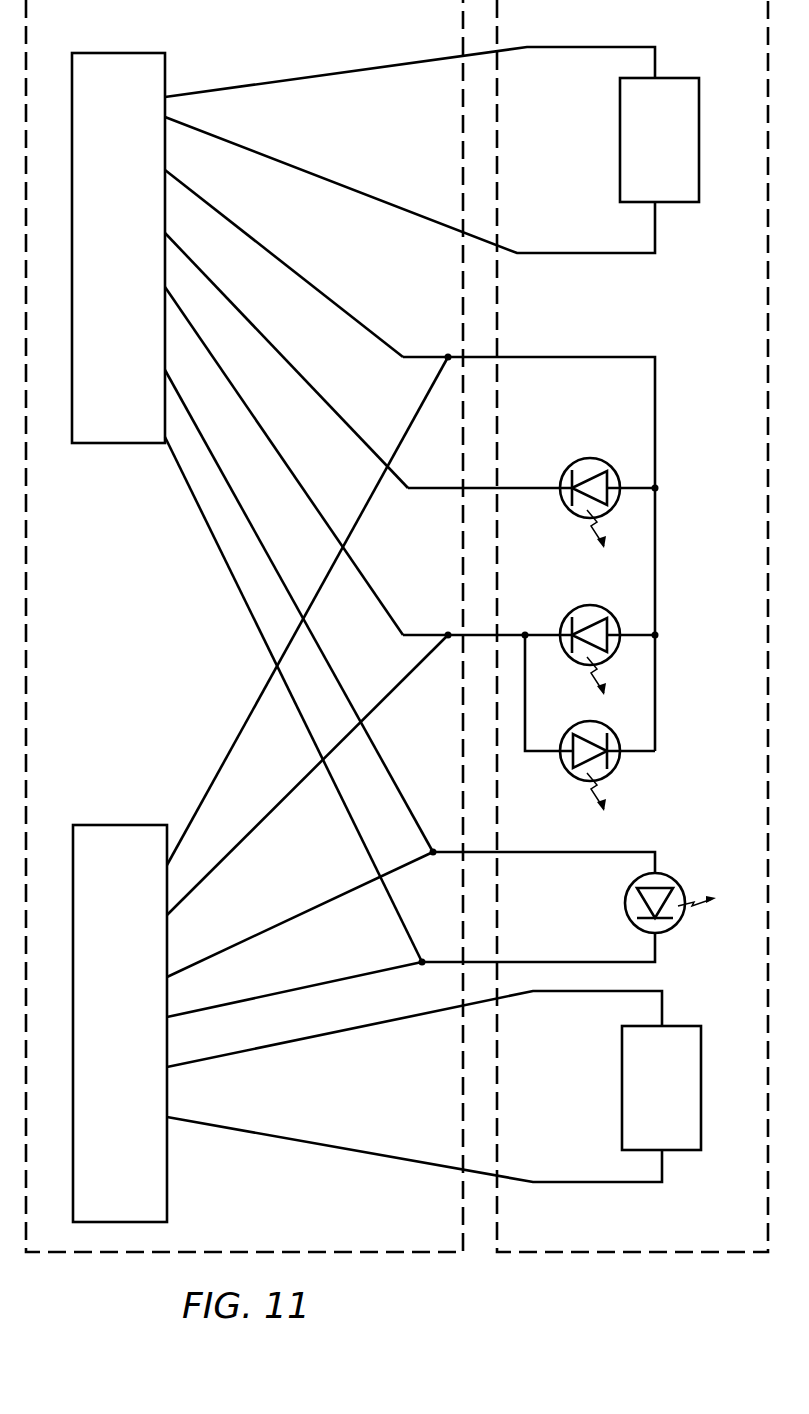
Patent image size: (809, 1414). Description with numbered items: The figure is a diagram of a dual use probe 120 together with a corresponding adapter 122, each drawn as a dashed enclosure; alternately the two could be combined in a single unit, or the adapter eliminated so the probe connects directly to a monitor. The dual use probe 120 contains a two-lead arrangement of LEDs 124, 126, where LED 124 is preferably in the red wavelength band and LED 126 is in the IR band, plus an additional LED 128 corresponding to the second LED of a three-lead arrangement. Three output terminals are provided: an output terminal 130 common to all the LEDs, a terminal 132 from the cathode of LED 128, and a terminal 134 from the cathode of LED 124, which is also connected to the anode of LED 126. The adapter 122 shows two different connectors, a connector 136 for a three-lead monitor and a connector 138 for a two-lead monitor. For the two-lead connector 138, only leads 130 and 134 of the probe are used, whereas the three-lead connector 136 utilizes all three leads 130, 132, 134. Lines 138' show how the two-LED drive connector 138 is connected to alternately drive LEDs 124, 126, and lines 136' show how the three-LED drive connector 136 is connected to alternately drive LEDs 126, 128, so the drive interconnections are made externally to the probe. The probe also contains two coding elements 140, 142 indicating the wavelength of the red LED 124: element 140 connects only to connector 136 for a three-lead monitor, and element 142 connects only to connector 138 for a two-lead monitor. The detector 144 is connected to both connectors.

The dual use probe 120 is at (635, 650).
The adapter 122 is at (244, 651).
The LED 124 is at (638, 629).
The LED 126 is at (638, 747).
The additional LED 128 is at (607, 475).
The output terminal 130 is at (569, 529).
The terminal 132 is at (490, 455).
The terminal 134 is at (488, 671).
The connector 136 is at (128, 227).
The lines 136' is at (286, 402).
The connector 138 is at (158, 1023).
The lines 138' is at (296, 636).
The coding element 140 is at (625, 140).
The coding element 142 is at (681, 1070).
The detector 144 is at (684, 890).